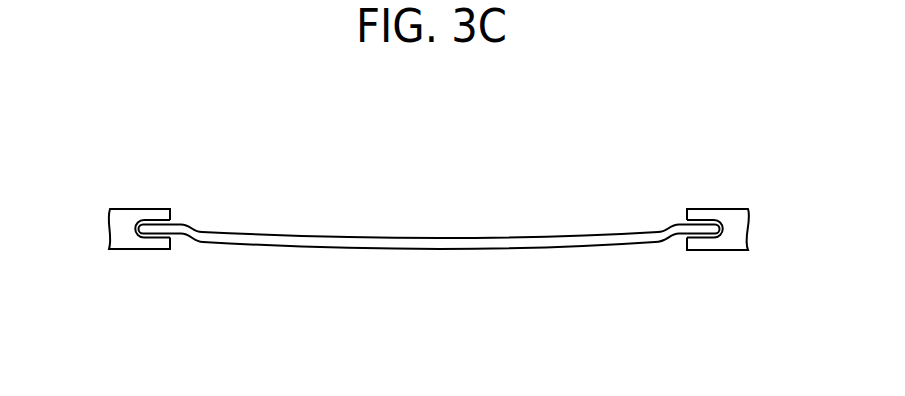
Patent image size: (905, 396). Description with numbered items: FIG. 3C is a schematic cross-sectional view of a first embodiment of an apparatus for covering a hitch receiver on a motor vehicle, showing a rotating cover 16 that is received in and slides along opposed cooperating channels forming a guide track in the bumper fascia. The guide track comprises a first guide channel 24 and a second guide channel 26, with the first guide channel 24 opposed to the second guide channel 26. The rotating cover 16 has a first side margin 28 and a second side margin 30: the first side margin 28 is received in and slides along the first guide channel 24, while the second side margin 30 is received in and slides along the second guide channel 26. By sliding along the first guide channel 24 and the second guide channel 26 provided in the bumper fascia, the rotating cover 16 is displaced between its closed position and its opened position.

The rotating cover 16 is at (442, 249).
The first guide channel 24 is at (147, 233).
The second guide channel 26 is at (712, 234).
The first side margin 28 is at (157, 230).
The second side margin 30 is at (703, 230).